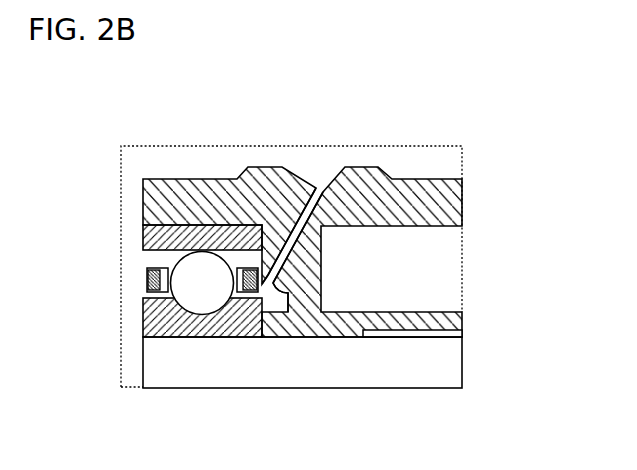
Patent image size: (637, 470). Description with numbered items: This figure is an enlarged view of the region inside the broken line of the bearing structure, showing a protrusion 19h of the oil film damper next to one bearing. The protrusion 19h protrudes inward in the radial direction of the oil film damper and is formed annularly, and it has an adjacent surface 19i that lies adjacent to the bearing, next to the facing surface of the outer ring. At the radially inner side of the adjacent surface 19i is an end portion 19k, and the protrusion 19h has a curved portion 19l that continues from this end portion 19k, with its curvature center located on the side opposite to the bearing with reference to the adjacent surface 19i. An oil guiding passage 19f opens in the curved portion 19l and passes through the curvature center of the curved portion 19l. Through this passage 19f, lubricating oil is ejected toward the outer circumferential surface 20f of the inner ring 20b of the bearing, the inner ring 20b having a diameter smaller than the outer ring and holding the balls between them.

The adjacent surface 19i is at (258, 246).
The oil guiding passage 19f is at (318, 191).
The protrusion 19h is at (318, 274).
The curved portion 19l is at (278, 286).
The inner ring 20b is at (143, 318).
The outer circumferential surface 20f is at (229, 305).
The end portion 19k is at (260, 270).